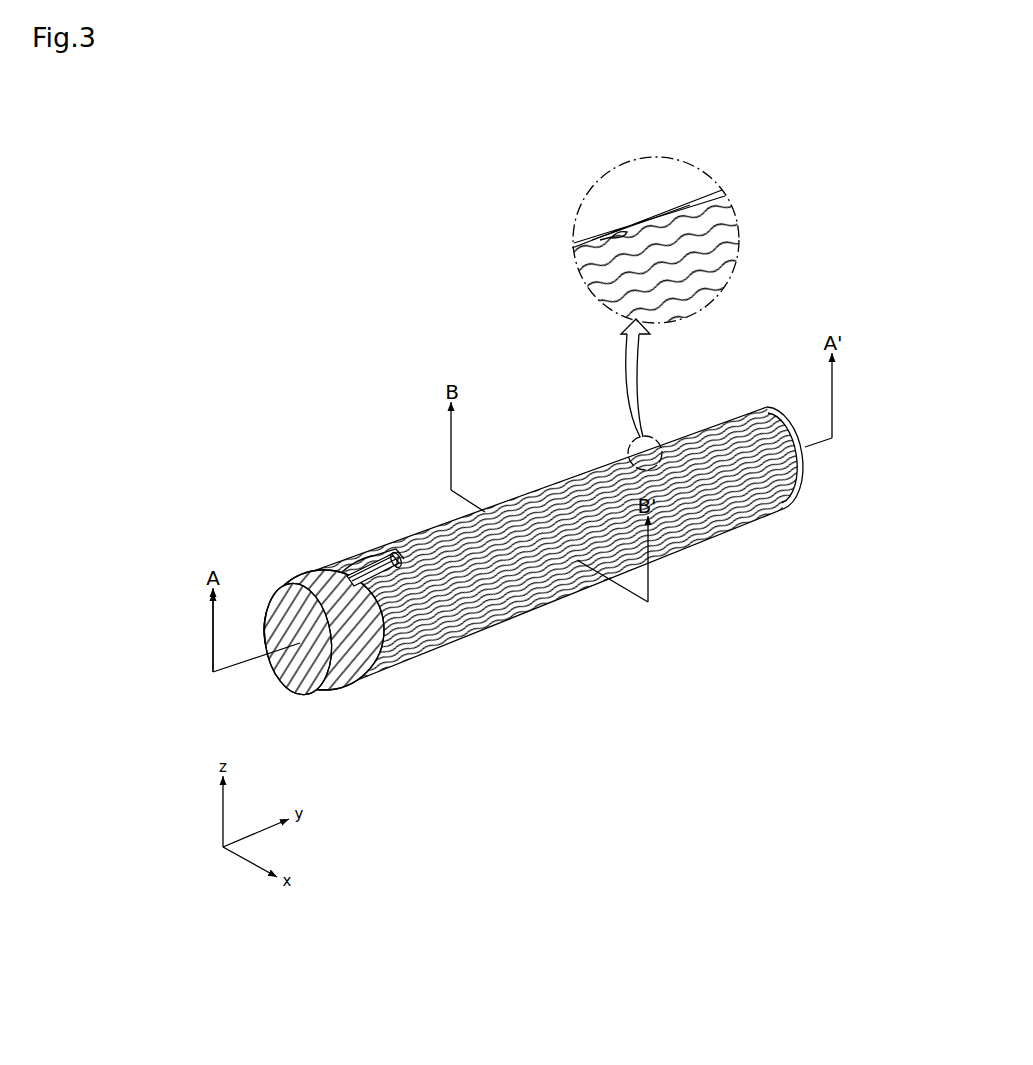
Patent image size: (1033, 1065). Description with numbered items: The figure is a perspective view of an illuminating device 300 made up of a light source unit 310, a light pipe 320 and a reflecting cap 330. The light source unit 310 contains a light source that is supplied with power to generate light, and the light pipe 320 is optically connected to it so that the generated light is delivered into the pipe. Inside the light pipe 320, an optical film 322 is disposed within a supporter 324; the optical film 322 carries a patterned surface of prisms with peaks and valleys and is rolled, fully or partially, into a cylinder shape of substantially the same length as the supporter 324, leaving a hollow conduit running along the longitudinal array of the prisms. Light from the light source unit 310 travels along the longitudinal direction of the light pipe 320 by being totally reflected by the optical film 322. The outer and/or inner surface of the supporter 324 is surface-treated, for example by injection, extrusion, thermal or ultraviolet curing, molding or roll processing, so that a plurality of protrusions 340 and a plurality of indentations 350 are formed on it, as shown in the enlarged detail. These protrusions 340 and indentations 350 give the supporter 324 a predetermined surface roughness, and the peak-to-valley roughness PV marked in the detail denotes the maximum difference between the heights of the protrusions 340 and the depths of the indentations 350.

The illuminating device 300 is at (816, 270).
The light source unit 310 is at (357, 656).
The light pipe 320 is at (432, 637).
The optical film 322 is at (357, 578).
The supporter 324 is at (393, 556).
The reflecting cap 330 is at (810, 478).
The protrusions 340 is at (668, 223).
The indentations 350 is at (690, 205).
The peak-to-valley surface roughness PV is at (600, 240).